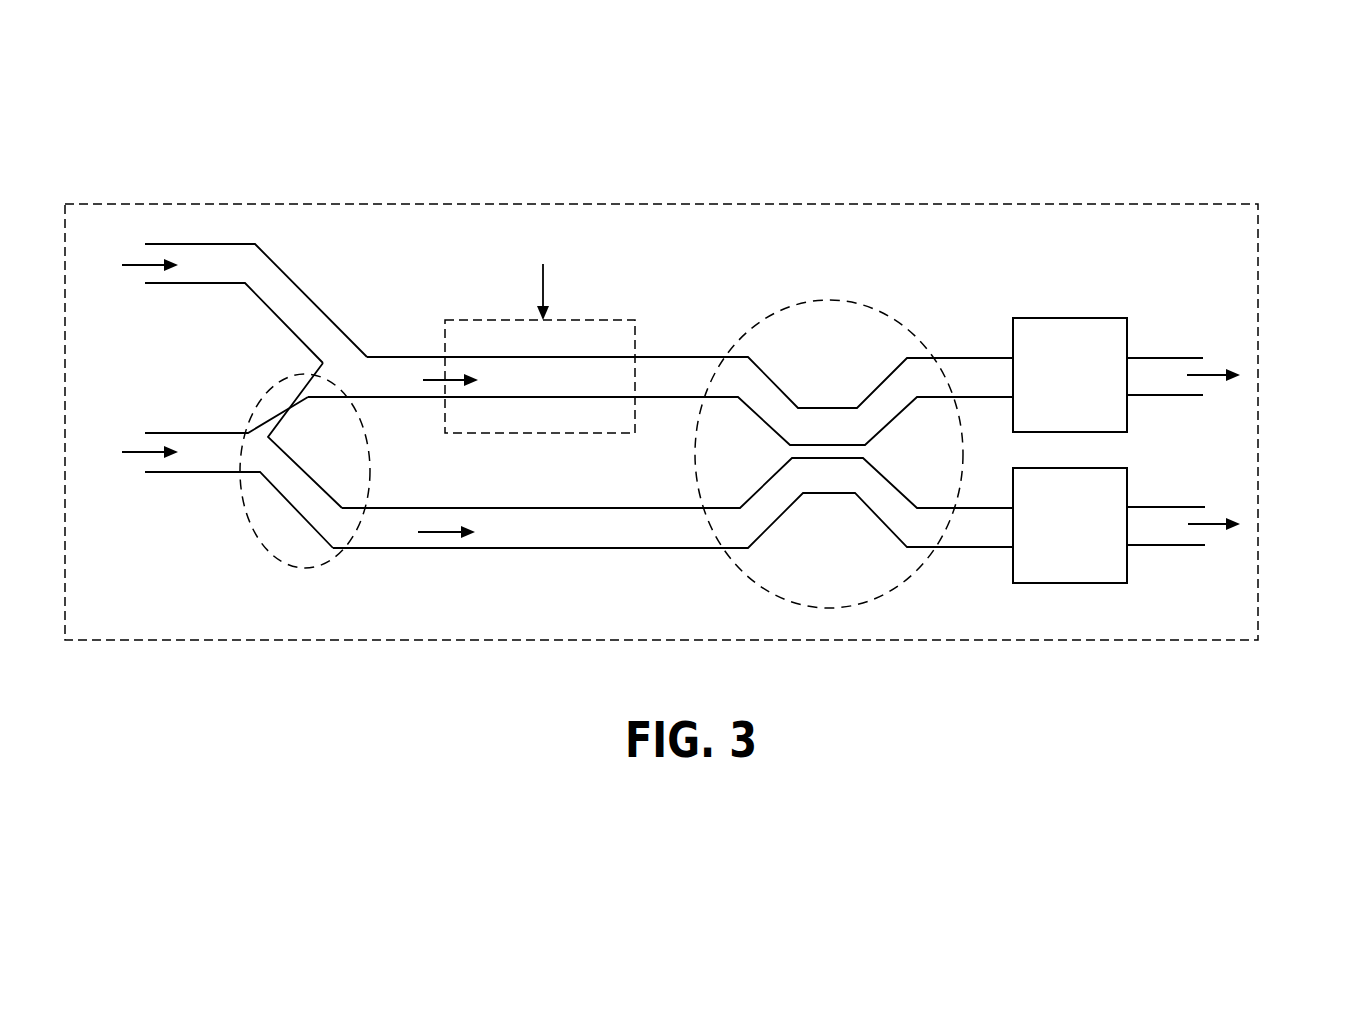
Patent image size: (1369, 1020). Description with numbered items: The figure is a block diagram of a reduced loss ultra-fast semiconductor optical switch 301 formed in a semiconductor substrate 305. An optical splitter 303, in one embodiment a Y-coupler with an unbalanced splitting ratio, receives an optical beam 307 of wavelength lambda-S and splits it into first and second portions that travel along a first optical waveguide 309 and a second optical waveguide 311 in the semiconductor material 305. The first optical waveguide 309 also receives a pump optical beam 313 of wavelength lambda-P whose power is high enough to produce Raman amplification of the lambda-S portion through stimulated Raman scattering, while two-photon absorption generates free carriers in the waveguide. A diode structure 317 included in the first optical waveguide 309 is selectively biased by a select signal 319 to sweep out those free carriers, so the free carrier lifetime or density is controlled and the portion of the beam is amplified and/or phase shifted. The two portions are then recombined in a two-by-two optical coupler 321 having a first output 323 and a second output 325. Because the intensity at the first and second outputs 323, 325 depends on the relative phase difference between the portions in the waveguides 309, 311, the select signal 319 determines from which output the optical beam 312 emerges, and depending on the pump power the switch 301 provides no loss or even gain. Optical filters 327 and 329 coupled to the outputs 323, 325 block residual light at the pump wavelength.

The optical switch 301 is at (1117, 72).
The semiconductor substrate 305 is at (1260, 222).
The pump optical beam 313 is at (125, 277).
The optical beam 307 is at (135, 467).
The optical splitter 303 is at (265, 549).
The first optical waveguide 309 is at (372, 398).
The second optical waveguide 311 is at (380, 550).
The diode structure 317 is at (637, 335).
The select signal 319 is at (583, 243).
The optical coupler 321 is at (727, 552).
The first output 323 is at (952, 350).
The second output 325 is at (952, 550).
The first optical filter 327 is at (1110, 316).
The second optical filter 329 is at (1108, 583).
The output optical beam 312 is at (1177, 348).